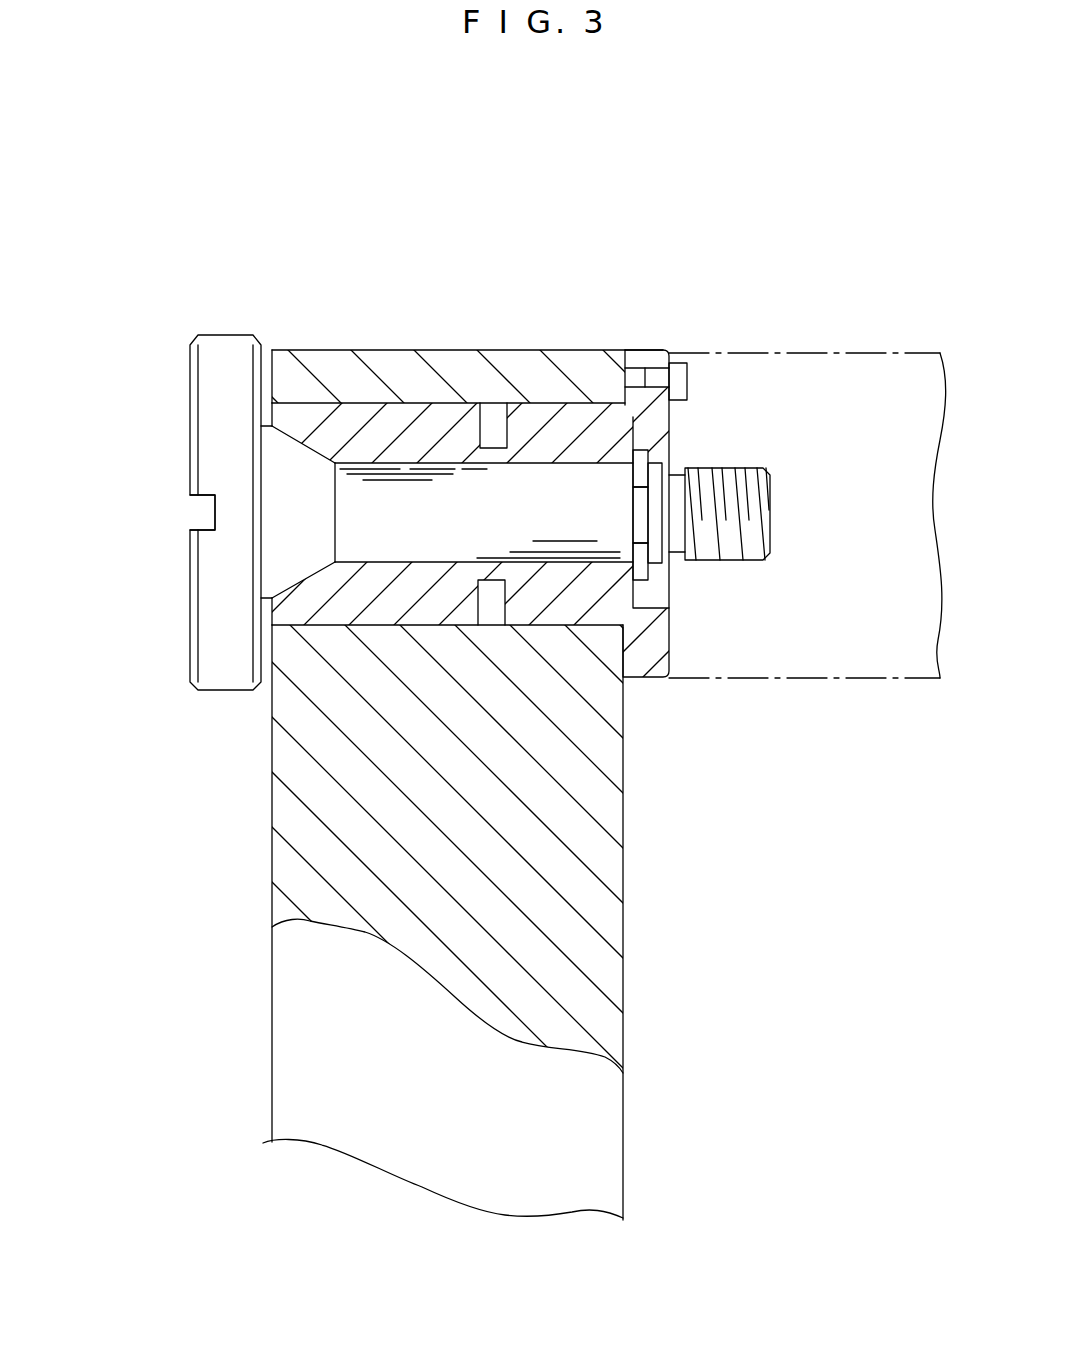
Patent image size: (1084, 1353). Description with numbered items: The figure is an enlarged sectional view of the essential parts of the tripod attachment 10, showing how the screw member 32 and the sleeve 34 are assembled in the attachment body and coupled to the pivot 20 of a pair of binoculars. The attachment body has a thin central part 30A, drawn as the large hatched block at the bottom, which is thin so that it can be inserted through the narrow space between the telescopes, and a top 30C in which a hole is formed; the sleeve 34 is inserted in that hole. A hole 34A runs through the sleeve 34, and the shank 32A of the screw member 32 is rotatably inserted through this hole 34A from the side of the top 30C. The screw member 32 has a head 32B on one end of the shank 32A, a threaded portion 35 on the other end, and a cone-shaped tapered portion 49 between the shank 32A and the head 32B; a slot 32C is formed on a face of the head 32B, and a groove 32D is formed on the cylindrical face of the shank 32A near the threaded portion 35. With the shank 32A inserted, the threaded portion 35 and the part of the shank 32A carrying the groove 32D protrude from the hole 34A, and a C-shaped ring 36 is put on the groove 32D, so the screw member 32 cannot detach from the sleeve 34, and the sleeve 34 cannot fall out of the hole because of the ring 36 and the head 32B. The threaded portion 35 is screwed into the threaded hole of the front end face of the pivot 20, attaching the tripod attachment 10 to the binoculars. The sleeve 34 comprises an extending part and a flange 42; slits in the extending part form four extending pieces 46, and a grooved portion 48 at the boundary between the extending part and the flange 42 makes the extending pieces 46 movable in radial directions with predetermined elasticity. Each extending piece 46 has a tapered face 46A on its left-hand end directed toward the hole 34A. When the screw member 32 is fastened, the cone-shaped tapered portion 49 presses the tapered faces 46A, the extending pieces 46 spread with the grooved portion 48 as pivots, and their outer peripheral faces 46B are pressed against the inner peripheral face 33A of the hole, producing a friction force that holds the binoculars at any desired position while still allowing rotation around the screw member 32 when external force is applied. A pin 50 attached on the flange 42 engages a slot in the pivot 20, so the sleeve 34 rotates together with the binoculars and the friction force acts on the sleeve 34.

The tripod attachment 10 is at (602, 211).
The pivot 20 is at (845, 352).
The central part 30A is at (600, 868).
The top 30C is at (567, 362).
The screw member 32 is at (234, 327).
The shank 32A is at (440, 537).
The head 32B is at (212, 386).
The slot 32C is at (212, 512).
The groove 32D is at (643, 530).
The inner peripheral face 33A is at (423, 408).
The sleeve 34 is at (473, 401).
The hole 34A is at (577, 463).
The threaded portion 35 is at (725, 482).
The C-shaped ring 36 is at (643, 458).
The flange 42 is at (645, 360).
The extending pieces 46 is at (345, 605).
The tapered face 46A is at (300, 452).
The outer peripheral faces 46B is at (308, 400).
The grooved portion 48 is at (493, 446).
The cone-shaped tapered portion 49 is at (293, 543).
The pin 50 is at (680, 380).